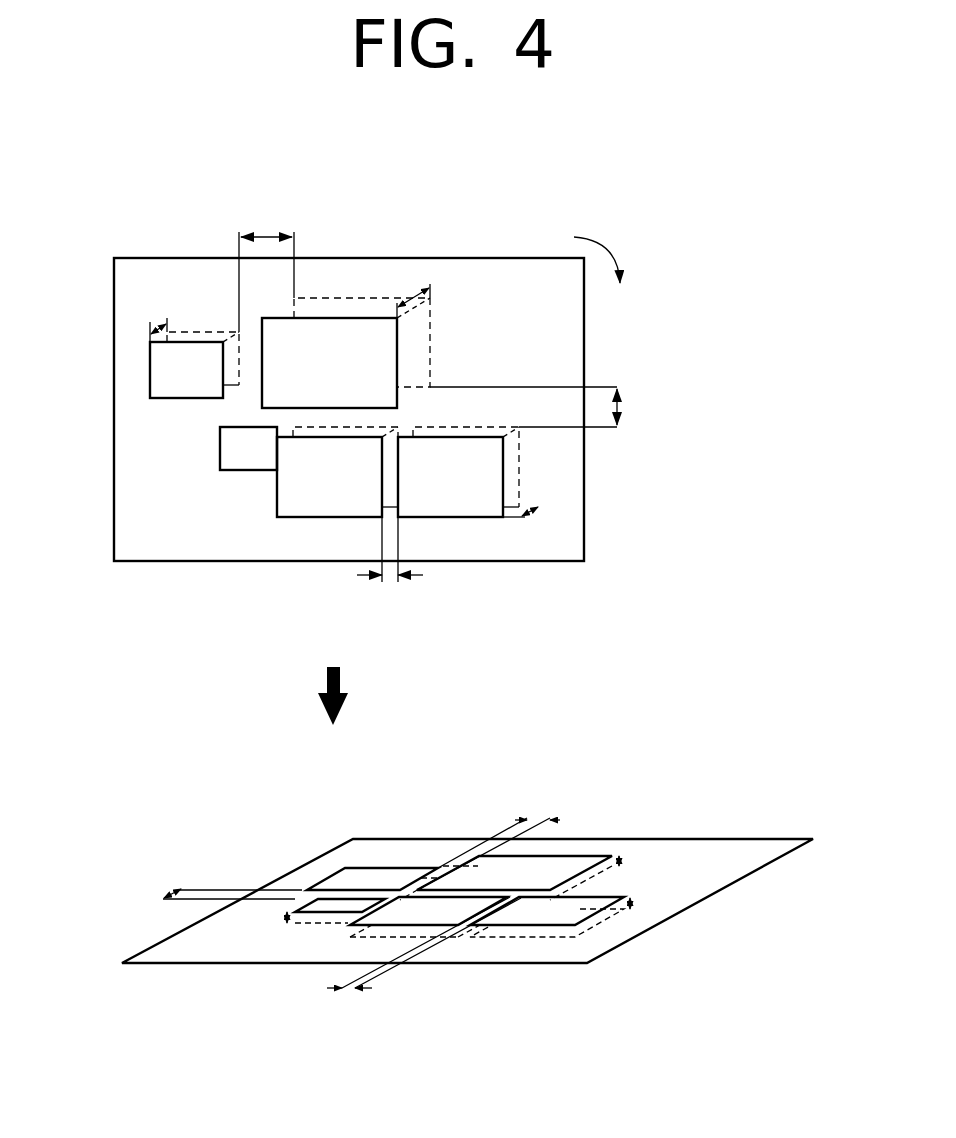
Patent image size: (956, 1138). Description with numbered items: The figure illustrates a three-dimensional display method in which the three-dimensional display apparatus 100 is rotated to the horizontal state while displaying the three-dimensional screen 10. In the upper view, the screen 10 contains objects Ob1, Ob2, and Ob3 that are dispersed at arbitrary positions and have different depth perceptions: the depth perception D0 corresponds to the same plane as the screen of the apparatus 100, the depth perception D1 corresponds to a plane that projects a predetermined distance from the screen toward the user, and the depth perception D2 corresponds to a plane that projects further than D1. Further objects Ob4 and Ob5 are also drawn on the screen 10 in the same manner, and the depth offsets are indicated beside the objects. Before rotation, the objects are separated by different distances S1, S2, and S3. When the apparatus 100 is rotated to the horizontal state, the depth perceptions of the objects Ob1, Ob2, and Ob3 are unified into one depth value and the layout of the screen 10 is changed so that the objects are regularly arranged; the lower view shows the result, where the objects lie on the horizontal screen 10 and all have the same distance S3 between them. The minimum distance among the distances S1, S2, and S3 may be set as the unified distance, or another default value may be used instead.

The 3D display apparatus 100 is at (172, 258).
The 3D screen 10 is at (524, 278).
The object Ob1 is at (150, 368).
The object Ob2 is at (338, 318).
The object Ob3 is at (220, 430).
The fourth object Ob4 is at (317, 517).
The fifth object Ob5 is at (460, 517).
The distance S1 is at (266, 268).
The distance S2 is at (542, 407).
The distance S3 is at (350, 770).
The depth perception D0 is at (200, 449).
The depth perception D1 is at (405, 610).
The depth perception D2 is at (411, 288).